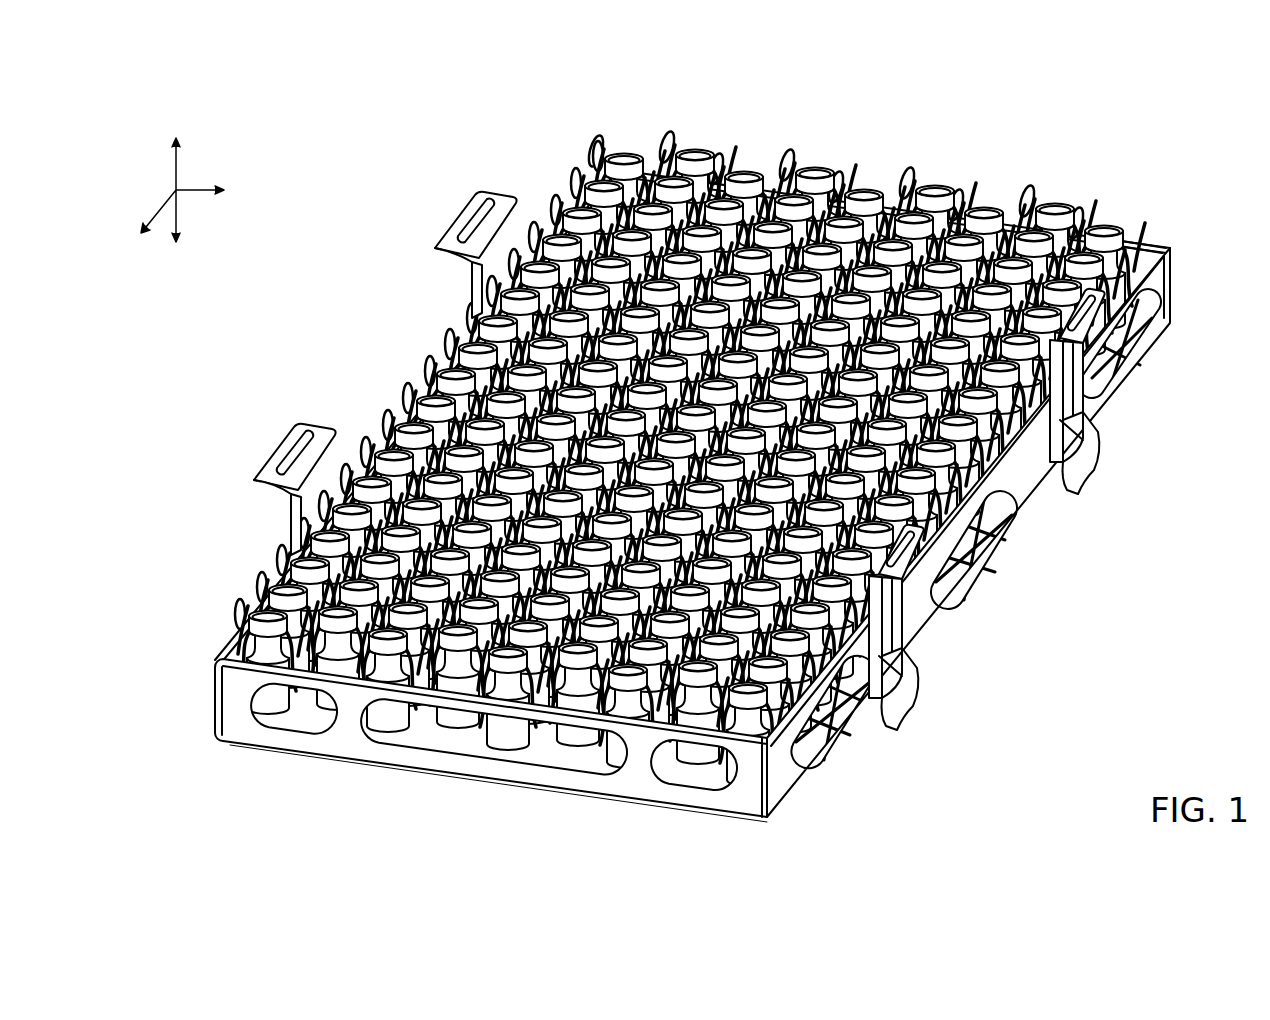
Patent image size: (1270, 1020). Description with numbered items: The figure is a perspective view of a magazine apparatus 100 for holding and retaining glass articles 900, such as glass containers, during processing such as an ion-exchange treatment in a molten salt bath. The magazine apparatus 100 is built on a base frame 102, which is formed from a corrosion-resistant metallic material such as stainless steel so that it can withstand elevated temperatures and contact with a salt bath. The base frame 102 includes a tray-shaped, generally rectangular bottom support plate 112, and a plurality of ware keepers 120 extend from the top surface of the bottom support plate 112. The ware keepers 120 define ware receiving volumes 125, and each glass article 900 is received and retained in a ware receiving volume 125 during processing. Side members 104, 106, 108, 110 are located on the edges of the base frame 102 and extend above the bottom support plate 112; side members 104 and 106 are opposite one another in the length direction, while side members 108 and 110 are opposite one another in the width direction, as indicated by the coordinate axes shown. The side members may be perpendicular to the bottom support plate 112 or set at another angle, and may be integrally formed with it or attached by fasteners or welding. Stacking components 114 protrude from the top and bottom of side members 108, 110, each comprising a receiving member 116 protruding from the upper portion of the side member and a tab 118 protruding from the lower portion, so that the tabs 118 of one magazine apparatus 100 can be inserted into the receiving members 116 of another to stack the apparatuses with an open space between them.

The magazine apparatus 100 is at (1046, 118).
The base frame 102 is at (704, 416).
The side member 104 is at (449, 715).
The side member 106 is at (1148, 238).
The side member 108 is at (228, 640).
The side member 110 is at (1003, 532).
The bottom support plate 112 is at (472, 777).
The stacking component 114 is at (467, 288).
The receiving member 116 is at (463, 220).
The tab 118 is at (912, 700).
The ware keeper 120 is at (810, 702).
The ware receiving volume 125 is at (730, 722).
The glass article 900 is at (690, 497).